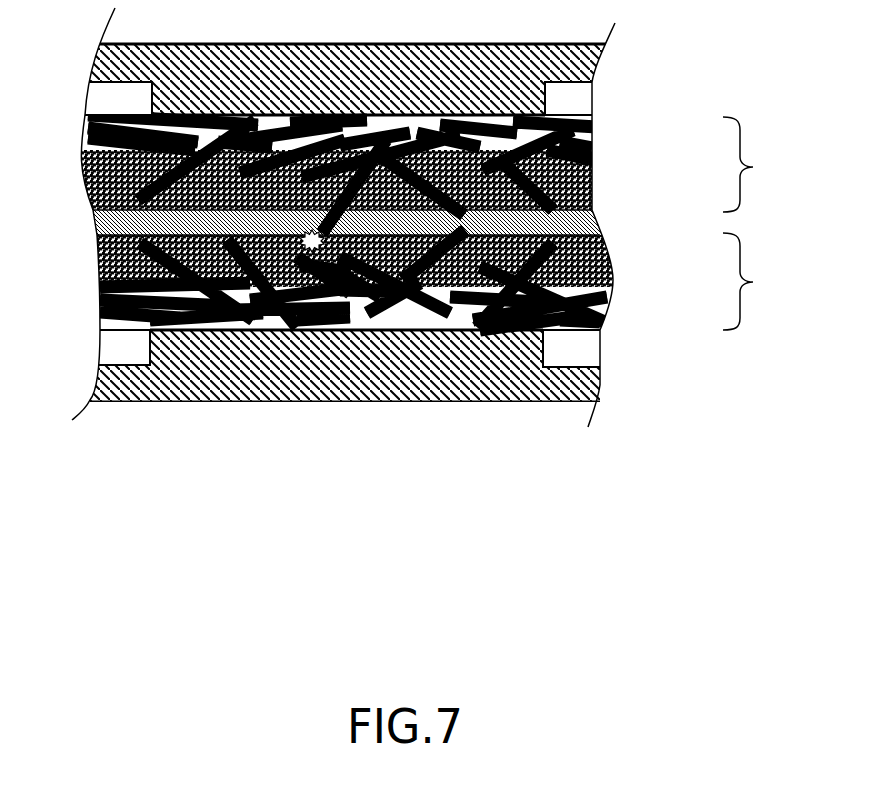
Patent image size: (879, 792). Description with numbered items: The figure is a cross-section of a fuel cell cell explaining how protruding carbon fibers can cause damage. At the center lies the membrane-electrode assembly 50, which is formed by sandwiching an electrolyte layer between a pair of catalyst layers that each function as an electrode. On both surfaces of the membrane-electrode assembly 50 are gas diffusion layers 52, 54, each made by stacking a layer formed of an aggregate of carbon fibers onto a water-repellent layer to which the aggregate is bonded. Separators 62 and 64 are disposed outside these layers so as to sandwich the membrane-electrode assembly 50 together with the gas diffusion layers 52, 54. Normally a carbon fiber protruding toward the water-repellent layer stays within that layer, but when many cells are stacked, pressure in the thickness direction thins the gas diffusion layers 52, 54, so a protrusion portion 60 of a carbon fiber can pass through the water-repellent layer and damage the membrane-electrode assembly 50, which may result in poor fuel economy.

The membrane-electrode assembly 50 is at (97, 222).
The gas diffusion layer 52 is at (762, 164).
The gas diffusion layer 54 is at (763, 281).
The protrusion portion 60 is at (263, 393).
The separator 62 is at (593, 75).
The separator 64 is at (602, 385).